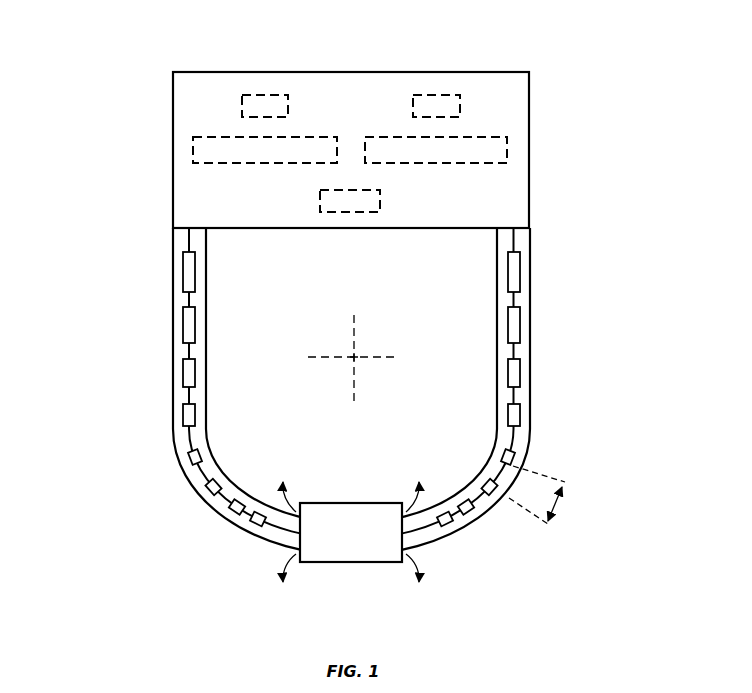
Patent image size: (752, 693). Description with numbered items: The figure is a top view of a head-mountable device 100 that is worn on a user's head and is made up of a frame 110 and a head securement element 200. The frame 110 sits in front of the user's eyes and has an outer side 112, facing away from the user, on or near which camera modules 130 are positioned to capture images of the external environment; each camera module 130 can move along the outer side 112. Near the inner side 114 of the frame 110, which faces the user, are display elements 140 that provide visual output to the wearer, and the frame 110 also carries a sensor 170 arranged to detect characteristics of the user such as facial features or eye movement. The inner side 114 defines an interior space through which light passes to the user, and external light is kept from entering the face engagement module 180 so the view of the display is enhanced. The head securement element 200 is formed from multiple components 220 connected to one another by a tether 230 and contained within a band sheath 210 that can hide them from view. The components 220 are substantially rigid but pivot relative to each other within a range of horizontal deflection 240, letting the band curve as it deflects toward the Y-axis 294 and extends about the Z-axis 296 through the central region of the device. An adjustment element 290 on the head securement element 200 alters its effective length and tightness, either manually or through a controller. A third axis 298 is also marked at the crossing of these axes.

The head-mountable device 100 is at (147, 28).
The frame 110 is at (213, 71).
The outer side 112 is at (349, 71).
The inner side 114 is at (352, 231).
The camera module 130 is at (267, 94).
The display element 140 is at (300, 136).
The sensor 170 is at (381, 200).
The face engagement module 180 is at (234, 231).
The head securement element 200 is at (172, 247).
The band sheath 210 is at (207, 417).
The components 220 is at (182, 275).
The tether 230 is at (188, 396).
The range of horizontal deflection 240 is at (562, 505).
The adjustment element 290 is at (350, 564).
The Y-axis 294 is at (353, 334).
The Z-axis 296 is at (356, 359).
The horizontal axis 298 is at (329, 359).